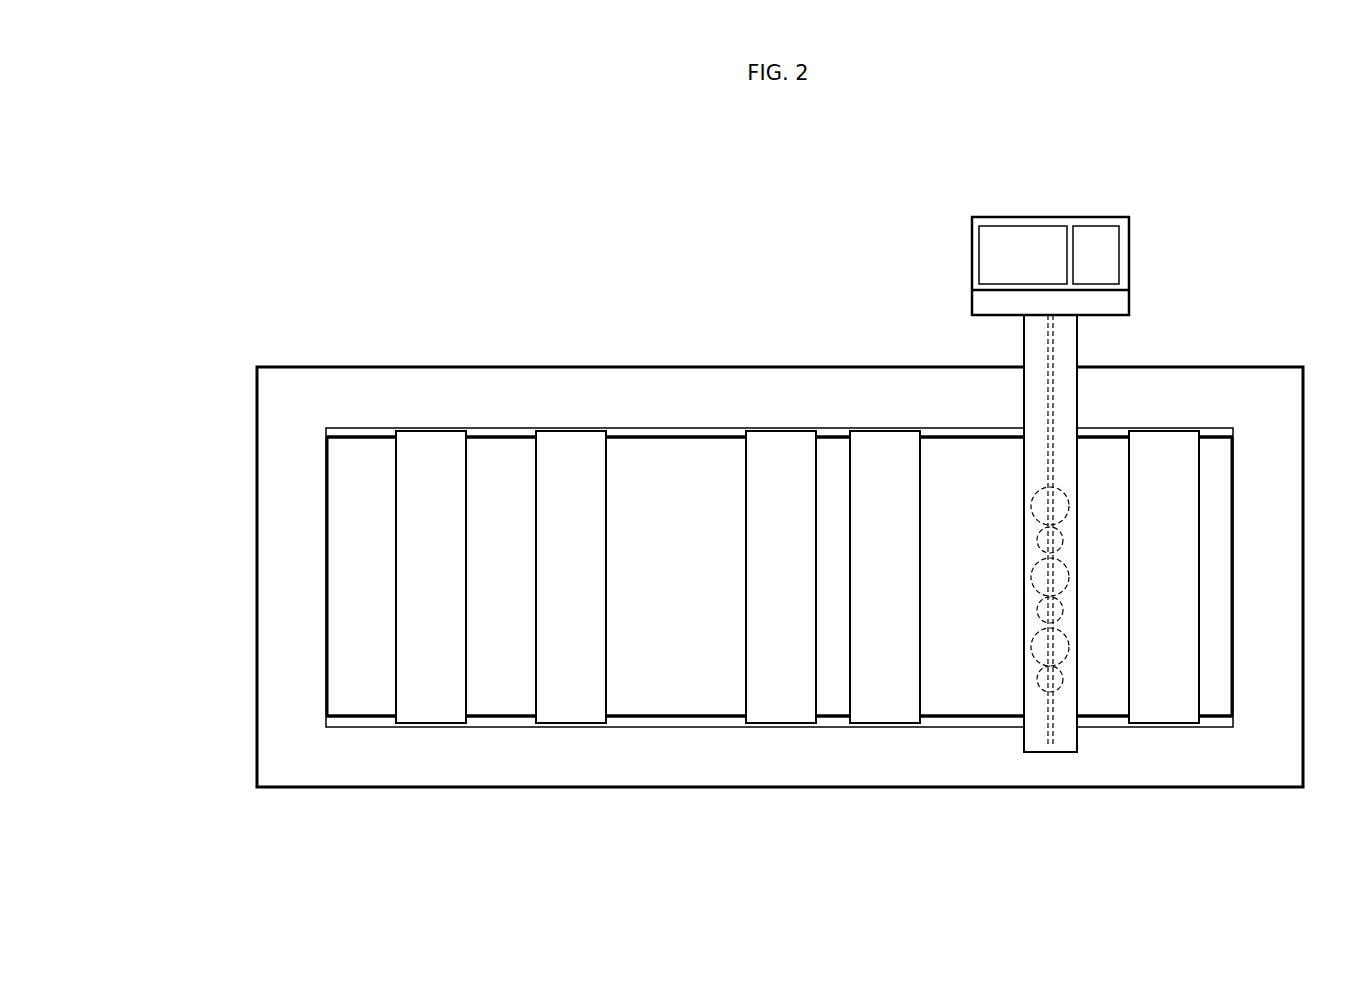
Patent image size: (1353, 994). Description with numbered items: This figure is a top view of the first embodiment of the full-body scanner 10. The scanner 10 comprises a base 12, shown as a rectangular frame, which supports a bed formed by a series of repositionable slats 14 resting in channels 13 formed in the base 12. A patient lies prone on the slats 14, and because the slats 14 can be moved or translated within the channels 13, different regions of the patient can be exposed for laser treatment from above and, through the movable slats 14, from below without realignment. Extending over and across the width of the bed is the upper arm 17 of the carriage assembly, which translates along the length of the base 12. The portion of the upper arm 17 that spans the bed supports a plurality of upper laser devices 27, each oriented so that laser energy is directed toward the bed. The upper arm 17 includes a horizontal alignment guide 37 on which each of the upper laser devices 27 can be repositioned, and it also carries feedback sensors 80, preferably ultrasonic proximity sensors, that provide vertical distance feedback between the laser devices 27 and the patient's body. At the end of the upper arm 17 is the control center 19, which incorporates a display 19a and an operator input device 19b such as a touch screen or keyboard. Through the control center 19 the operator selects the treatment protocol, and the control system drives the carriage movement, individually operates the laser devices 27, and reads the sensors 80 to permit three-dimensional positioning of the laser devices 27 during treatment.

The scanner 10 is at (308, 323).
The base 12 is at (268, 530).
The channels 13 is at (676, 438).
The slats 14 is at (571, 457).
The upper arm 17 is at (1073, 728).
The control center 19 is at (1126, 256).
The display 19a is at (1011, 257).
The operator input device 19b is at (1090, 243).
The upper laser devices 27 is at (1055, 505).
The horizontal alignment guide 37 is at (1050, 737).
The feedback sensors 80 is at (1042, 542).